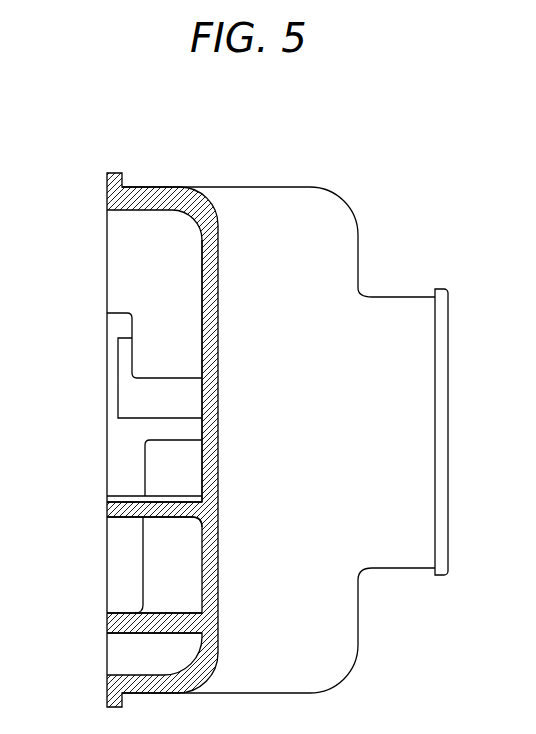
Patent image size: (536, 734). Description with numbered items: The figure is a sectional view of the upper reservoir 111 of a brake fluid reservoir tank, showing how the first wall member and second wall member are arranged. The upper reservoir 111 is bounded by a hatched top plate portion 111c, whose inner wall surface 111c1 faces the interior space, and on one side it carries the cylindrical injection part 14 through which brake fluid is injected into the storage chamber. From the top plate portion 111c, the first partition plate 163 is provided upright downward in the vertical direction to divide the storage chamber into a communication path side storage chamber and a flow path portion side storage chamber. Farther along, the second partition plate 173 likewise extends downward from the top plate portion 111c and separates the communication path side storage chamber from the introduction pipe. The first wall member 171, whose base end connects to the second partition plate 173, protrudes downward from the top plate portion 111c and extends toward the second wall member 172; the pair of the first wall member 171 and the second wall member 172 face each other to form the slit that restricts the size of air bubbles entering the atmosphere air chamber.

The upper reservoir 111 is at (376, 142).
The injection part 14 is at (393, 297).
The top plate portion 111c is at (218, 340).
The inner wall surface 111c1 is at (202, 293).
The second wall member 172 is at (107, 271).
The first wall member 171 is at (145, 475).
The first partition plate 163 is at (107, 511).
The second partition plate 173 is at (107, 627).